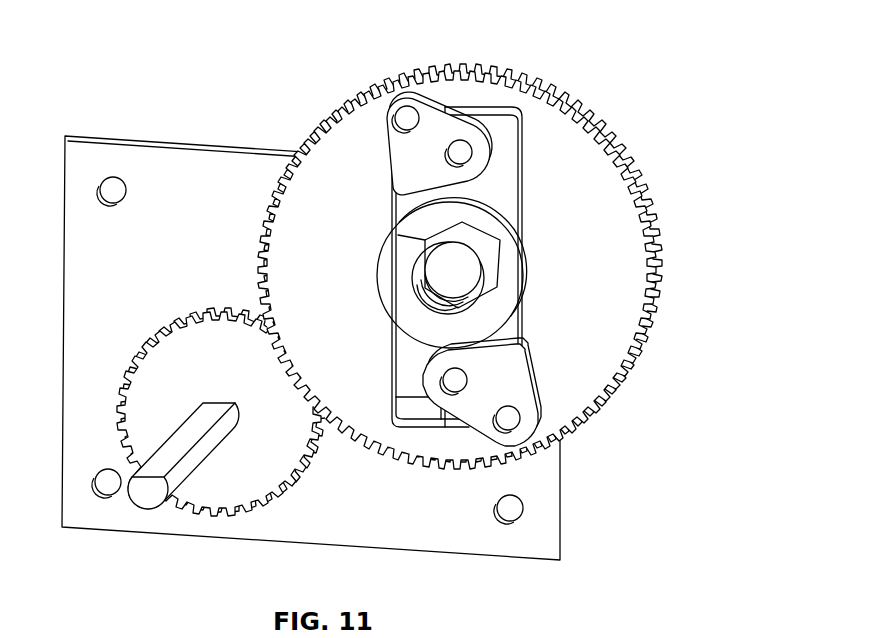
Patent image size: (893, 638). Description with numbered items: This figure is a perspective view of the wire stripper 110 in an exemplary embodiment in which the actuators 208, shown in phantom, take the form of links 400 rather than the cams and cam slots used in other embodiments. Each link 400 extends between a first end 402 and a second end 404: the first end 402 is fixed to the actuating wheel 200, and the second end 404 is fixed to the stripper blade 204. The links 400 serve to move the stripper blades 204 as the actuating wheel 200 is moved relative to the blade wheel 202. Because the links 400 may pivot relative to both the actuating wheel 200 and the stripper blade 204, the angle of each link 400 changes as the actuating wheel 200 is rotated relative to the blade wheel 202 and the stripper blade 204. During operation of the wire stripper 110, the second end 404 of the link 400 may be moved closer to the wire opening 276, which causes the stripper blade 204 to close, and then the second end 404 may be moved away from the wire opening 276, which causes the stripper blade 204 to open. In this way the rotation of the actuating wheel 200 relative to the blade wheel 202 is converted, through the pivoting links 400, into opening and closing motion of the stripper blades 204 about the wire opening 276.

The wire stripper 110 is at (258, 73).
The actuating wheel 200 is at (499, 266).
The blade wheel 202 is at (658, 283).
The stripper blade 204 is at (506, 313).
The actuator 208 is at (434, 112).
The wire opening 276 is at (455, 272).
The link 400 is at (450, 115).
The first end 402 is at (372, 81).
The second end 404 is at (508, 193).